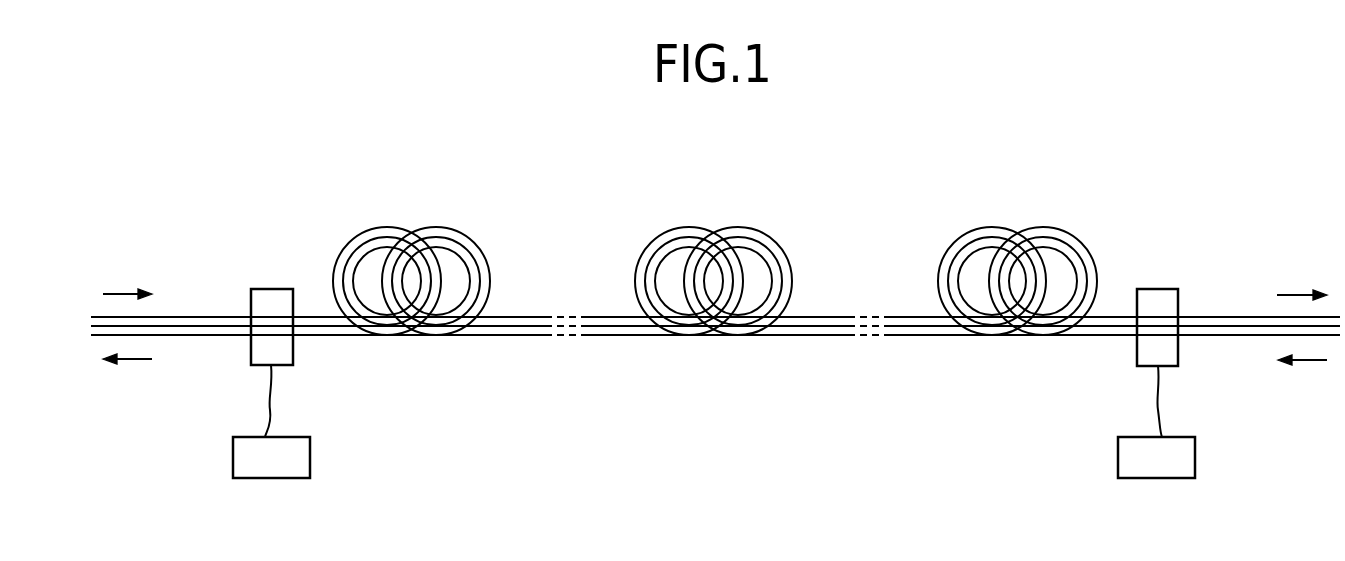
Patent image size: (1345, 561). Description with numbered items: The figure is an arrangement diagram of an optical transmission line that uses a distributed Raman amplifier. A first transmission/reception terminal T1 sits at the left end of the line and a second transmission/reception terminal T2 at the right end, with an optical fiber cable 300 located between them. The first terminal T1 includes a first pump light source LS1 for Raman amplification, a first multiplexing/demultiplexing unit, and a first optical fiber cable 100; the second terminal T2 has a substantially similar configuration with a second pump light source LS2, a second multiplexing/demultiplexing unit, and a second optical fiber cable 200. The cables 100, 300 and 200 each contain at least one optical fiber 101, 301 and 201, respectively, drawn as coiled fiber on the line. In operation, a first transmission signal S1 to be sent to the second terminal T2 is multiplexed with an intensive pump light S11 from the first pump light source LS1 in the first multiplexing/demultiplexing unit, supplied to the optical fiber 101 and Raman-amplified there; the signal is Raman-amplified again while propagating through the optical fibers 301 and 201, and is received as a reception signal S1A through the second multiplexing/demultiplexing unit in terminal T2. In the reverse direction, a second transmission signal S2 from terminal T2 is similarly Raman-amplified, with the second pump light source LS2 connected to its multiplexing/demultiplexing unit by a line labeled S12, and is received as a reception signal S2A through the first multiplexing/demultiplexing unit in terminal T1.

The first transmission/reception terminal T1 is at (287, 212).
The second transmission/reception terminal T2 is at (1170, 212).
The first optical fiber cable 100 is at (405, 208).
The optical fiber 101 is at (453, 240).
The optical fiber cable 300 is at (708, 208).
The optical fiber 301 is at (752, 240).
The second optical fiber cable 200 is at (1018, 208).
The optical fiber 201 is at (1057, 240).
The first transmission signal S1 is at (126, 280).
The reception signal S2A is at (126, 378).
The reception signal S1A is at (1308, 281).
The second transmission signal S2 is at (1302, 378).
The pump light S11 is at (272, 395).
The second local signal line S12 is at (1162, 390).
The first pump light source LS1 is at (310, 455).
The second pump light source LS2 is at (1195, 455).